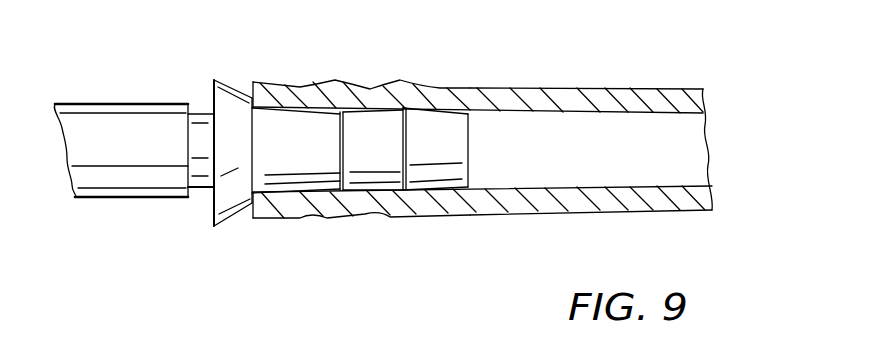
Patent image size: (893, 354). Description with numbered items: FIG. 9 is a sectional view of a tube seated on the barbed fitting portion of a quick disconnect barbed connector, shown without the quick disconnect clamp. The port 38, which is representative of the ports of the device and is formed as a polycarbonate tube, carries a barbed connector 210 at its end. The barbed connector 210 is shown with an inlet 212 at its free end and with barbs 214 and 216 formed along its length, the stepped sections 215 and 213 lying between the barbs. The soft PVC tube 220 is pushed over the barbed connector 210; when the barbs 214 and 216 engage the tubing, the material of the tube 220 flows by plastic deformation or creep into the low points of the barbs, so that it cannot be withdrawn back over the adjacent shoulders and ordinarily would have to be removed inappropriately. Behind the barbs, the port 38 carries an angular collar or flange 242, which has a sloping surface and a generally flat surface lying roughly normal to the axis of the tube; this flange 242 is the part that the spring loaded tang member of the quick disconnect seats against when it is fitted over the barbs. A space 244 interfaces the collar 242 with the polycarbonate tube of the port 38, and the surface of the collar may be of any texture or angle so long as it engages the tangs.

The port 38 is at (121, 103).
The space 244 is at (199, 199).
The angular collar 242 is at (243, 63).
The first tubular segment 215 is at (336, 162).
The second tubular segment 213 is at (401, 163).
The barb 214 is at (401, 100).
The inlet 212 is at (468, 174).
The barbed connector 210 is at (442, 142).
The barb 216 is at (337, 97).
The tube 220 is at (618, 89).